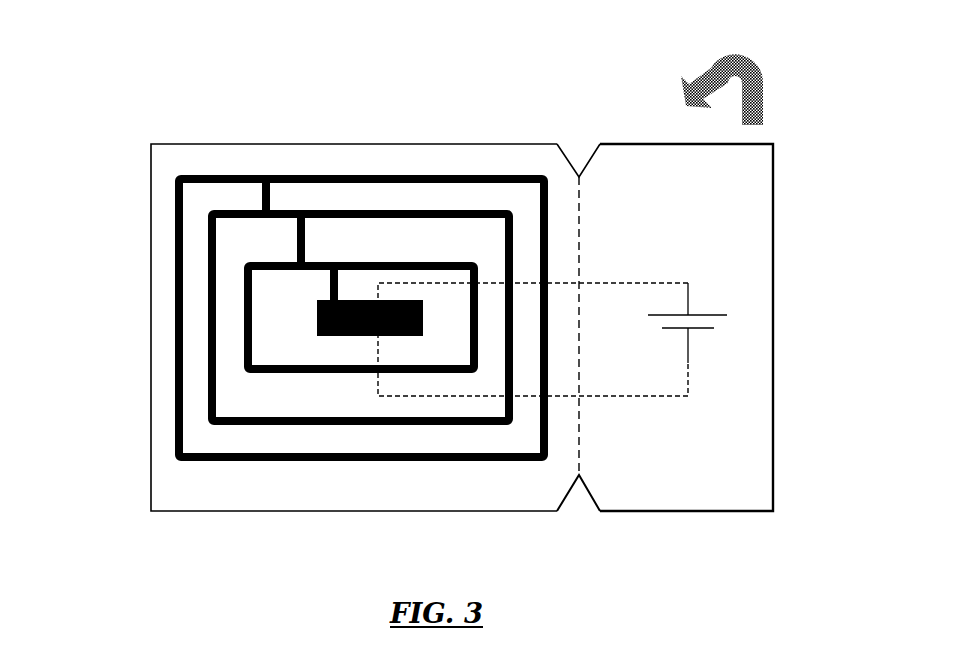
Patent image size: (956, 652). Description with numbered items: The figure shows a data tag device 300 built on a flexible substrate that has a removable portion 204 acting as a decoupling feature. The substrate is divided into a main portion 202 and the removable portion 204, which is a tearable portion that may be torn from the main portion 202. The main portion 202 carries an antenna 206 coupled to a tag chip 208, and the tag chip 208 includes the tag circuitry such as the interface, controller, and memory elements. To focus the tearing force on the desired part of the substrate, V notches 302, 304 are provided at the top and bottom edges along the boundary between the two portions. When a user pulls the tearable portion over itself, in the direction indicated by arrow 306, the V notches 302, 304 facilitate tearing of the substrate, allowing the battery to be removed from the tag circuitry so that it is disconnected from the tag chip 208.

The data tag device 300 is at (82, 56).
The main portion 202 is at (150, 335).
The removable portion 204 is at (773, 457).
The antenna 206 is at (175, 415).
The tag chip 208 is at (357, 300).
The V notch 302 is at (580, 131).
The V notch 304 is at (580, 524).
The arrow 306 is at (764, 90).